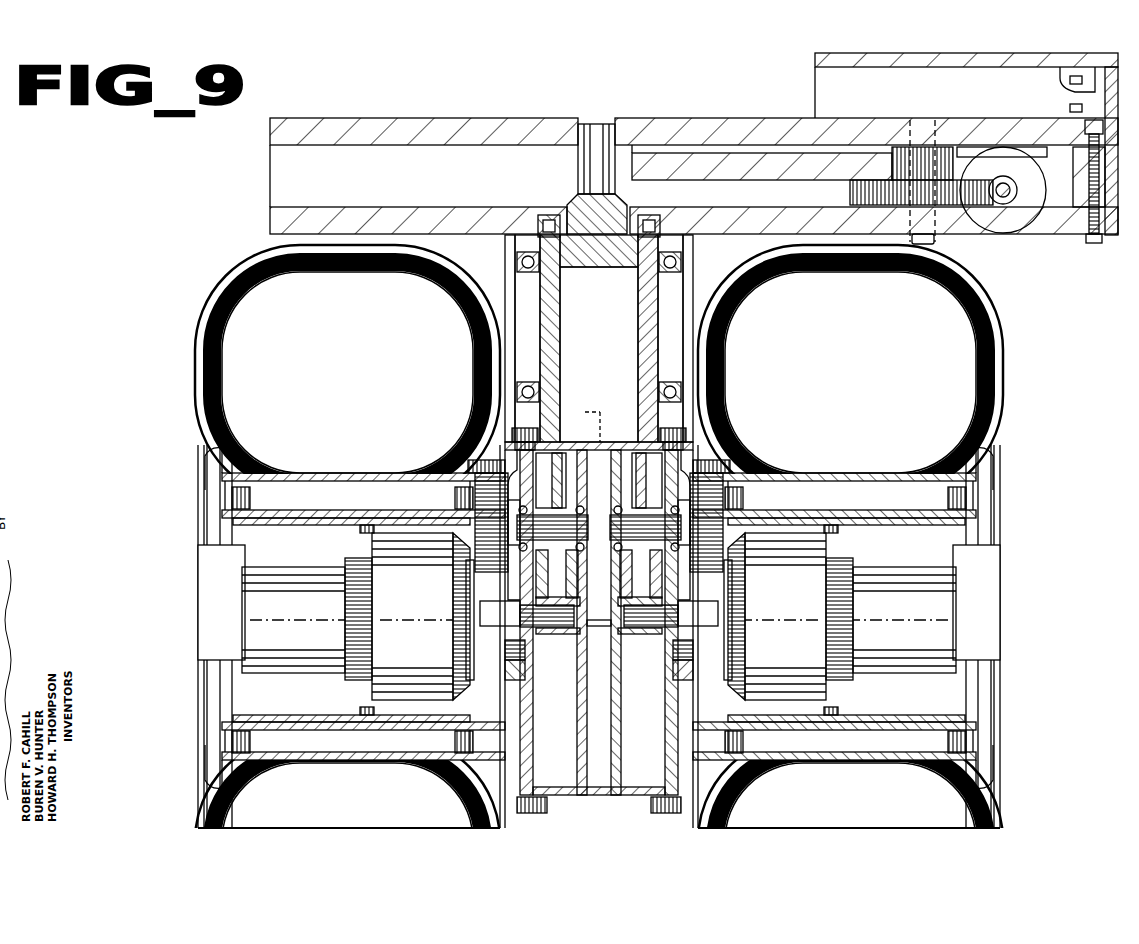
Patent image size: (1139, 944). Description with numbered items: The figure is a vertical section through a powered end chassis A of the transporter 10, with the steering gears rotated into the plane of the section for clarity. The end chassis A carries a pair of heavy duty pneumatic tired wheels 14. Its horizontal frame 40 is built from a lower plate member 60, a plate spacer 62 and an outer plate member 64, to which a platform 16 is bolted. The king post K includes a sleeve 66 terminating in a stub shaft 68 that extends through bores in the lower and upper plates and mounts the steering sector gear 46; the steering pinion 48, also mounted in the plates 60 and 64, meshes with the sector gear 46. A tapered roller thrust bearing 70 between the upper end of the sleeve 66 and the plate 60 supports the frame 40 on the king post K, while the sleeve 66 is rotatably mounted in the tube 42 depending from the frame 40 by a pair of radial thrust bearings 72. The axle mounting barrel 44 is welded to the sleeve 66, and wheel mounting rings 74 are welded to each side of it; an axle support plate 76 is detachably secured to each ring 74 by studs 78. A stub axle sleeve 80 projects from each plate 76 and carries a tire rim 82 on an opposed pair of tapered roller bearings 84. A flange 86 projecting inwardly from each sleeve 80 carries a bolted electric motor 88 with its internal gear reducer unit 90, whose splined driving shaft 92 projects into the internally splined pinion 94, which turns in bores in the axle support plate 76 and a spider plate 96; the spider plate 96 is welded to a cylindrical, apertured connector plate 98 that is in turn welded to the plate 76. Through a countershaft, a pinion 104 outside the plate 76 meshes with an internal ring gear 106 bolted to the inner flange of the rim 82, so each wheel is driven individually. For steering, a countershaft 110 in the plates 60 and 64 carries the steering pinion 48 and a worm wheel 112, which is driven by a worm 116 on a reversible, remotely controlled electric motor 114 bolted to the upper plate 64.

The transporter 10 is at (458, 92).
The pneumatic tired wheels 14 is at (310, 310).
The platform 16 is at (815, 73).
The horizontal frame 40 is at (282, 178).
The tube 42 is at (507, 317).
The axle mounting barrel 44 is at (612, 436).
The steering sector gear 46 is at (727, 156).
The steering pinion 48 is at (900, 160).
The lower plate member 60 is at (275, 216).
The plate spacer 62 is at (1085, 140).
The outer plate member 64 is at (651, 121).
The sleeve 66 is at (612, 297).
The stub shaft 68 is at (578, 160).
The tapered roller thrust bearing 70 is at (548, 216).
The radial thrust bearings 72 is at (517, 262).
The wheel mounting rings 74 is at (515, 446).
The axle support plate 76 is at (512, 470).
The studs 78 is at (512, 432).
The stub axle sleeve 80 is at (325, 512).
The tire rims 82 is at (298, 478).
The tapered roller bearings 84 is at (232, 498).
The flange 86 is at (362, 535).
The electric motor 88 is at (312, 623).
The gear reducer unit 90 is at (424, 635).
The driving shaft 92 is at (505, 628).
The pinion 94 is at (600, 622).
The spider plate 96 is at (608, 660).
The connector plate 98 is at (643, 775).
The pinion 104 is at (466, 590).
The internal ring gear 106 is at (475, 478).
The countershaft 110 is at (935, 135).
The worm wheel 112 is at (850, 190).
The electric motor 114 is at (1030, 200).
The worm 116 is at (1002, 206).
The end chassis A is at (192, 400).
The king post K is at (548, 339).